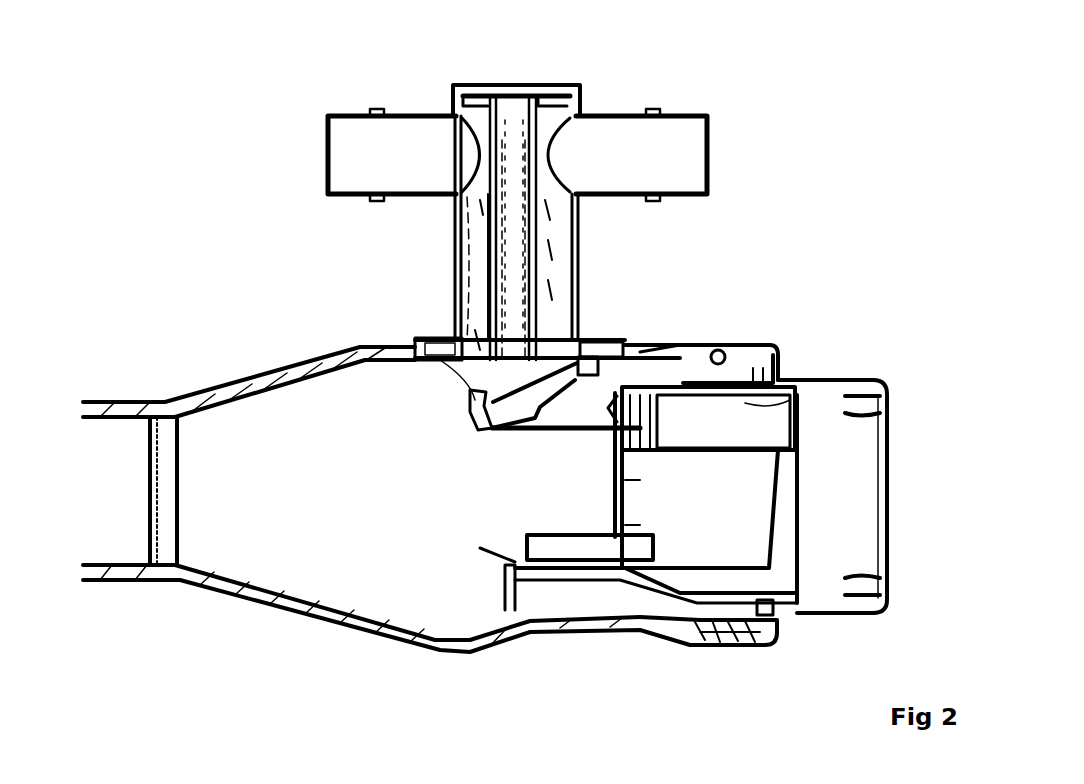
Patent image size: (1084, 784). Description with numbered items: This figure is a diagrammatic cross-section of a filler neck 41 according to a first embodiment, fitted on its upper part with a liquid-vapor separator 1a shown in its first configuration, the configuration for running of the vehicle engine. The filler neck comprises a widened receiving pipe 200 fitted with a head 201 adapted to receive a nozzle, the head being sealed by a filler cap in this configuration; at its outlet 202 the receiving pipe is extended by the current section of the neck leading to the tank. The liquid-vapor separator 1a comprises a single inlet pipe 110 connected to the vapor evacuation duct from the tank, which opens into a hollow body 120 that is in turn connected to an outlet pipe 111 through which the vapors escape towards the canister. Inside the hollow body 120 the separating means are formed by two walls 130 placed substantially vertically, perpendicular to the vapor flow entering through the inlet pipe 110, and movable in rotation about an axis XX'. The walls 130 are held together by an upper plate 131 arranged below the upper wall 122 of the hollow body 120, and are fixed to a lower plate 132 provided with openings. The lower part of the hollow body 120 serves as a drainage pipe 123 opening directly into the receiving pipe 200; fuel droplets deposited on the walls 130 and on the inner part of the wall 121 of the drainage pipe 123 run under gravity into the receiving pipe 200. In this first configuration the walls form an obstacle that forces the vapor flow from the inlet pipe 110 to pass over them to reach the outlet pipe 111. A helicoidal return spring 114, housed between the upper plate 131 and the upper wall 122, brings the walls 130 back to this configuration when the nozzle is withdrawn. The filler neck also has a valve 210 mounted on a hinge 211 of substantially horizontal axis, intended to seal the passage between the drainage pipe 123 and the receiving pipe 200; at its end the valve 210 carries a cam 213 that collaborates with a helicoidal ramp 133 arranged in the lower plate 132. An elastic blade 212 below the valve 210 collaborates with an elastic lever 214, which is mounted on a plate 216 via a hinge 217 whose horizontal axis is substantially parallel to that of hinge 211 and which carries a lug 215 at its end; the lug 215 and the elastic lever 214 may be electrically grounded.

The liquid-vapor separator 1a is at (372, 70).
The filler neck 41 is at (232, 350).
The inlet pipe 110 is at (343, 138).
The outlet pipe 111 is at (690, 133).
The helicoidal return spring 114 is at (567, 85).
The hollow body 120 is at (458, 122).
The wall of the drainage pipe 121 is at (462, 247).
The upper wall 122 is at (462, 95).
The drainage pipe 123 is at (478, 282).
The walls 130 is at (500, 262).
The upper plate 131 is at (528, 92).
The lower plate 132 is at (450, 336).
The helicoidal ramp 133 is at (453, 365).
The receiving pipe 200 is at (365, 485).
The head 201 is at (845, 492).
The outlet 202 is at (120, 520).
The valve 210 is at (645, 365).
The hinge 211 is at (565, 400).
The elastic blade 212 is at (540, 438).
The cam 213 is at (470, 402).
The elastic lever 214 is at (612, 448).
The lug 215 is at (600, 522).
The plate 216 is at (815, 383).
The hinge 217 is at (642, 450).